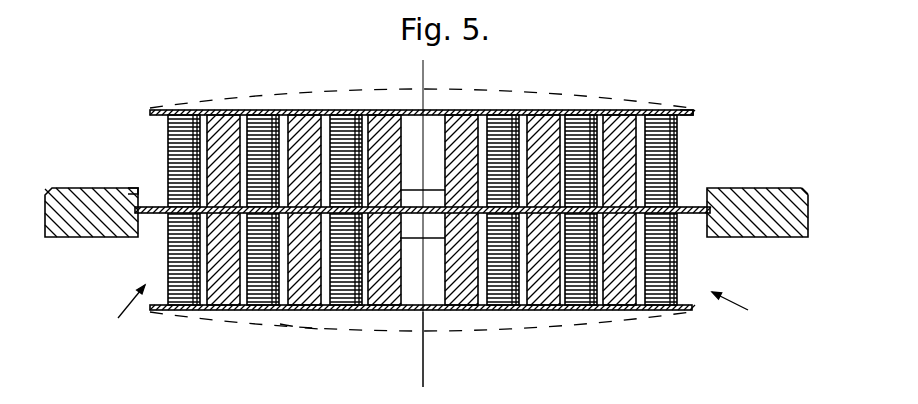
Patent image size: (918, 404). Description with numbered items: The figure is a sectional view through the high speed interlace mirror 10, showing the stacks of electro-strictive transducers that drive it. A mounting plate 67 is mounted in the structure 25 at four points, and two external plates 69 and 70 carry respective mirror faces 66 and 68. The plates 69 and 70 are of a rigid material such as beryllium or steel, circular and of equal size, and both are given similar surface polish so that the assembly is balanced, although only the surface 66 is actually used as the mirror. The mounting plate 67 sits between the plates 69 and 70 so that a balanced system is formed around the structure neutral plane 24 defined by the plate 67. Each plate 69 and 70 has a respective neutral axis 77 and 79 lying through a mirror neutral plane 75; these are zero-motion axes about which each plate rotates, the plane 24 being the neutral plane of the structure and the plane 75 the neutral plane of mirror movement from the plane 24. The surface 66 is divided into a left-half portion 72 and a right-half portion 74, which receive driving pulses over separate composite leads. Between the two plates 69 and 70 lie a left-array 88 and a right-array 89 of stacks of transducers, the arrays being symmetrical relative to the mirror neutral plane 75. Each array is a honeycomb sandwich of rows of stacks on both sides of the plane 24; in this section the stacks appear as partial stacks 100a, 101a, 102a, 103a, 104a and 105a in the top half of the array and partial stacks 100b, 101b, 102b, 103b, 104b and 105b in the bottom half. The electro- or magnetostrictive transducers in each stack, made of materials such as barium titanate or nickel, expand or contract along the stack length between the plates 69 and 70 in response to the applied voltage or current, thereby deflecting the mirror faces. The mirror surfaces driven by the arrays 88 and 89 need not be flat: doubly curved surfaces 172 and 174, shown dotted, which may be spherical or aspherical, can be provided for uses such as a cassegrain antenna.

The high speed interlace mirror 10 is at (128, 136).
The structure neutral plane 24 is at (428, 218).
The structure 25 is at (68, 232).
The mirror face 66 is at (222, 117).
The mounting plate 67 is at (128, 190).
The mirror face 68 is at (236, 312).
The external plate 69 is at (302, 112).
The external plate 70 is at (300, 340).
The left-half portion 72 is at (152, 124).
The right-half portion 74 is at (702, 150).
The mirror neutral plane 75 is at (423, 83).
The neutral axis 77 is at (418, 120).
The neutral axis 79 is at (418, 312).
The left-array 88 is at (122, 313).
The right-array 89 is at (742, 314).
The partial stack 100a is at (668, 118).
The partial stack 100b is at (662, 300).
The partial stack 101a is at (620, 118).
The partial stack 101b is at (633, 310).
The partial stack 102a is at (588, 118).
The partial stack 102b is at (588, 302).
The partial stack 103a is at (545, 118).
The partial stack 103b is at (545, 312).
The partial stack 104a is at (504, 119).
The partial stack 104b is at (502, 304).
The partial stack 105a is at (462, 117).
The partial stack 105b is at (463, 312).
The doubly curved surface 172 is at (215, 101).
The doubly curved surface 174 is at (318, 327).